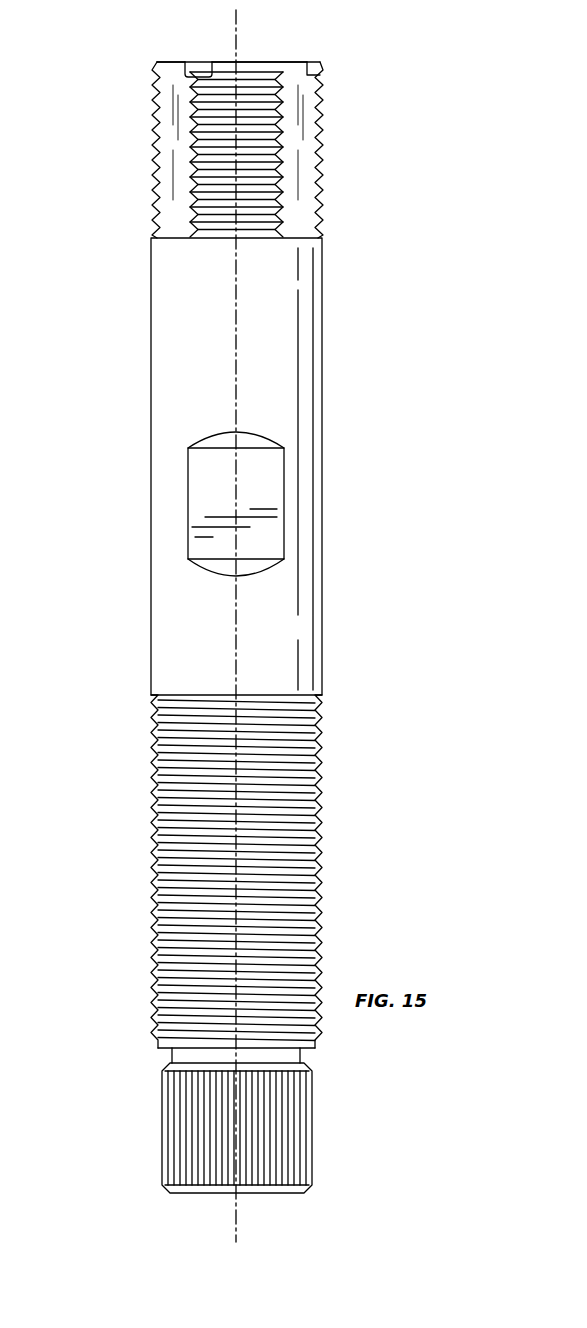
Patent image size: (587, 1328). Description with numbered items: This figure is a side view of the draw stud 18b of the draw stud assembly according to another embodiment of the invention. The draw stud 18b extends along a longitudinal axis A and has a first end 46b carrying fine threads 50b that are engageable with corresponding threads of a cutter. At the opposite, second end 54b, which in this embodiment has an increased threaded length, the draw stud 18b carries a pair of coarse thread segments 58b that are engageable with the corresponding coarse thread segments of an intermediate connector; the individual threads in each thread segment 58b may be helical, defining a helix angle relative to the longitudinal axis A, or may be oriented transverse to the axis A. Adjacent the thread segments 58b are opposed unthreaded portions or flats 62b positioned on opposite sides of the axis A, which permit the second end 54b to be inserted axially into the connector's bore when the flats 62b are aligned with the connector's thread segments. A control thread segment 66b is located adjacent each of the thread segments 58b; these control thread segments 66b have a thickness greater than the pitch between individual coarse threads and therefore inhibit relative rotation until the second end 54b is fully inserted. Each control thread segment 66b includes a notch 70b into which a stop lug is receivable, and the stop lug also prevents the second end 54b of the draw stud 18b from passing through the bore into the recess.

The draw stud 18b is at (95, 362).
The second end 54b is at (354, 144).
The coarse thread segments 58b is at (157, 160).
The flats 62b is at (178, 97).
The control thread segment 66b is at (157, 62).
The notch 70b is at (197, 72).
The first end 46b is at (338, 837).
The fine threads 50b is at (322, 910).
The longitudinal axis A is at (232, 48).